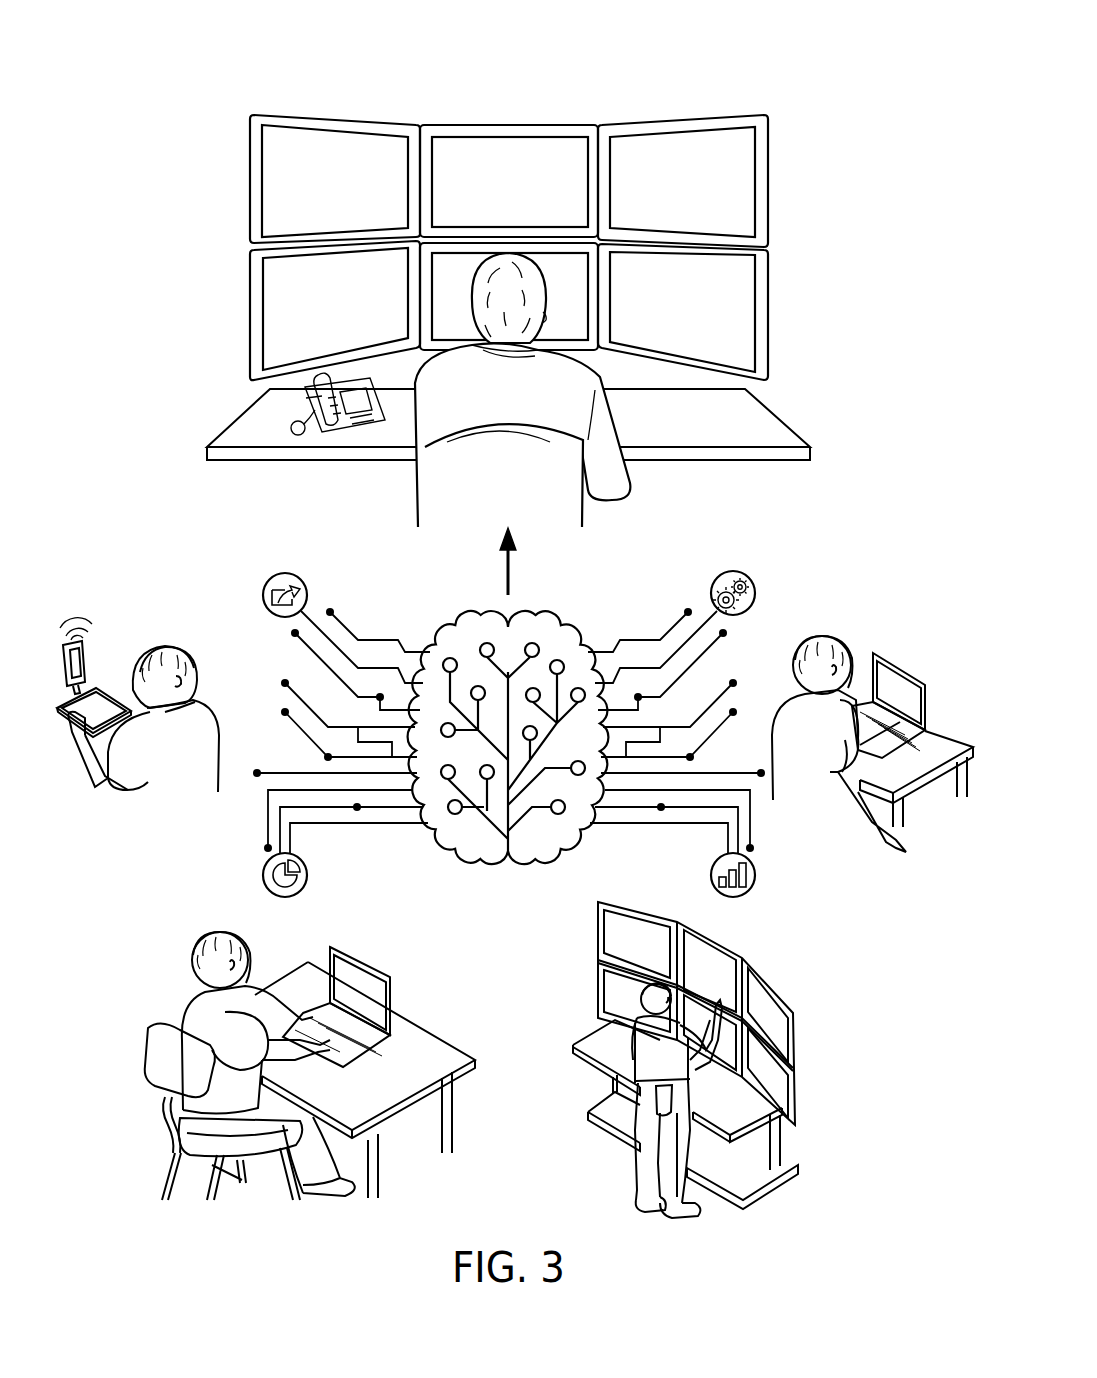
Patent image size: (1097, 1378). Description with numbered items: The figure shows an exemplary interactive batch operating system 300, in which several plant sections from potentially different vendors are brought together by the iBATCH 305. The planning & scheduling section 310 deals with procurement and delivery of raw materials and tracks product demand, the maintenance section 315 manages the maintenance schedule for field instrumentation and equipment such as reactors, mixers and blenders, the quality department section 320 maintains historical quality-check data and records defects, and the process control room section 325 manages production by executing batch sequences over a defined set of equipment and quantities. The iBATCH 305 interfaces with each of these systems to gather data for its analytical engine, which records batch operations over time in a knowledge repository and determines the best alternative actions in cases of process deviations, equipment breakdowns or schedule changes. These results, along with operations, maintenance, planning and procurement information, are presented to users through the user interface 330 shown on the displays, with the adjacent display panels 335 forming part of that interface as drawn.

The interactive batch (iBATCH) operating system 300 is at (276, 70).
The iBATCH 305 is at (500, 618).
The planning & scheduling section 310 is at (754, 596).
The maintenance section 315 is at (266, 597).
The quality department section 320 is at (264, 875).
The process control room section 325 is at (754, 875).
The user interface 330 is at (768, 182).
The left display monitors 335 is at (272, 185).